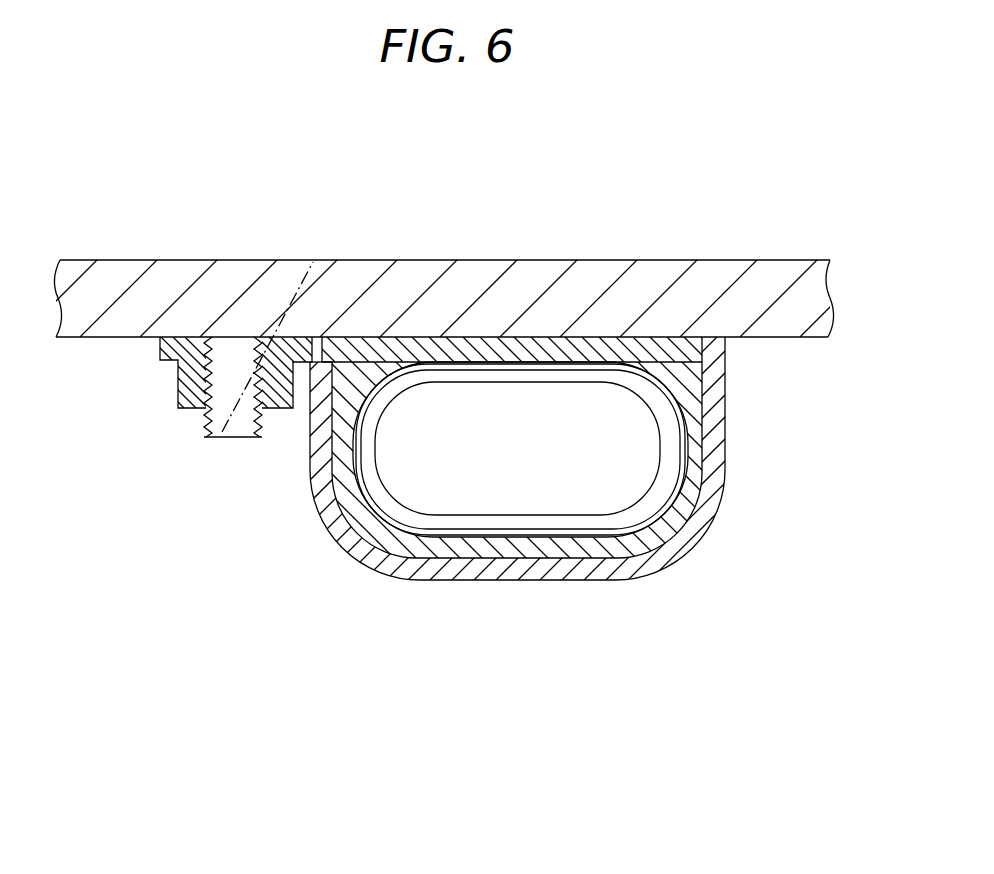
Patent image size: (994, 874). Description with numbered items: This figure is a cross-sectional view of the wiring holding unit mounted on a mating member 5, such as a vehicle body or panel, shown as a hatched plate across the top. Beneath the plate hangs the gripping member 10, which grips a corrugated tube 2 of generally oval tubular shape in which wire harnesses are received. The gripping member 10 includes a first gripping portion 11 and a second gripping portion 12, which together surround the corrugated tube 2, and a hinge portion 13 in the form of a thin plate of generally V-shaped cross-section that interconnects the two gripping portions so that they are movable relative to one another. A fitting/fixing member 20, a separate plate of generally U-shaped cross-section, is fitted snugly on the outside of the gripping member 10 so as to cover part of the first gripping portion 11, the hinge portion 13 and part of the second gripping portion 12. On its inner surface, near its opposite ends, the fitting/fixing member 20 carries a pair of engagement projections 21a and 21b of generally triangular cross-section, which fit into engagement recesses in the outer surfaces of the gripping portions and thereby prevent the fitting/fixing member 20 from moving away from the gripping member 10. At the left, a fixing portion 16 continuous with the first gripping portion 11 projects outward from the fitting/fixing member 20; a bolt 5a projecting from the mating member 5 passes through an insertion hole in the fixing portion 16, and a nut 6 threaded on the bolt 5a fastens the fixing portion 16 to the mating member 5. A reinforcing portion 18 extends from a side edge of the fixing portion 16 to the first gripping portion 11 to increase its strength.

The corrugated tube 2 is at (455, 506).
The mating member 5 is at (366, 260).
The bolt 5a is at (240, 443).
The nut 6 is at (180, 408).
The gripping member 10 is at (480, 322).
The first gripping portion 11 is at (362, 540).
The second gripping portion 12 is at (703, 447).
The hinge portion 13 is at (537, 522).
The fixing portion 16 is at (158, 340).
The reinforcing portion 18 is at (256, 441).
The fitting/fixing member 20 is at (637, 592).
The engagement projection 21a is at (340, 393).
The engagement projection 21b is at (703, 388).